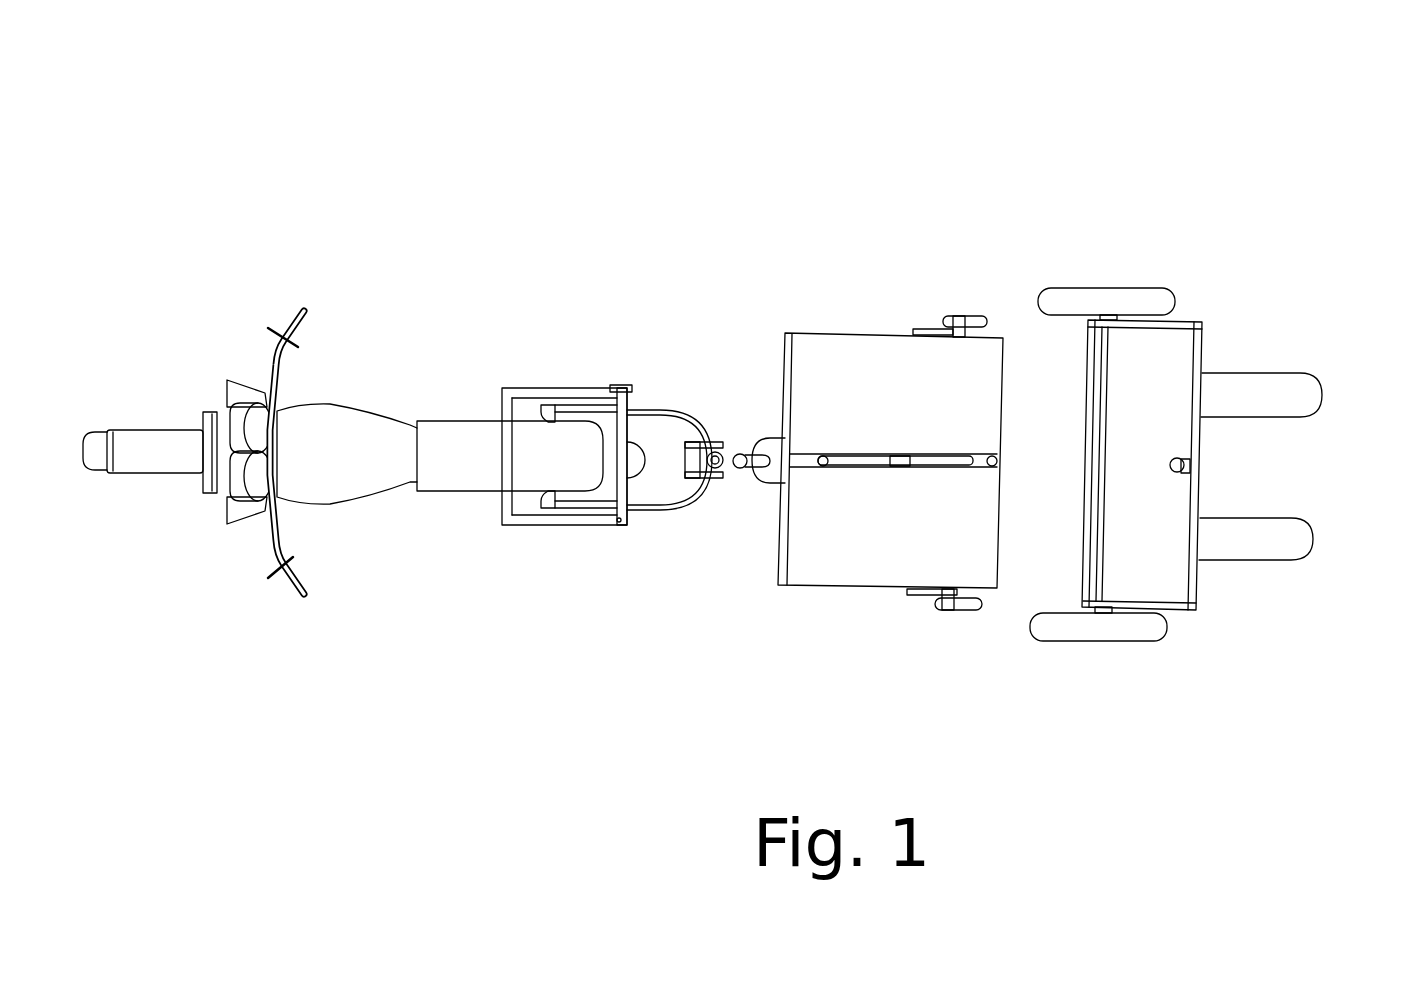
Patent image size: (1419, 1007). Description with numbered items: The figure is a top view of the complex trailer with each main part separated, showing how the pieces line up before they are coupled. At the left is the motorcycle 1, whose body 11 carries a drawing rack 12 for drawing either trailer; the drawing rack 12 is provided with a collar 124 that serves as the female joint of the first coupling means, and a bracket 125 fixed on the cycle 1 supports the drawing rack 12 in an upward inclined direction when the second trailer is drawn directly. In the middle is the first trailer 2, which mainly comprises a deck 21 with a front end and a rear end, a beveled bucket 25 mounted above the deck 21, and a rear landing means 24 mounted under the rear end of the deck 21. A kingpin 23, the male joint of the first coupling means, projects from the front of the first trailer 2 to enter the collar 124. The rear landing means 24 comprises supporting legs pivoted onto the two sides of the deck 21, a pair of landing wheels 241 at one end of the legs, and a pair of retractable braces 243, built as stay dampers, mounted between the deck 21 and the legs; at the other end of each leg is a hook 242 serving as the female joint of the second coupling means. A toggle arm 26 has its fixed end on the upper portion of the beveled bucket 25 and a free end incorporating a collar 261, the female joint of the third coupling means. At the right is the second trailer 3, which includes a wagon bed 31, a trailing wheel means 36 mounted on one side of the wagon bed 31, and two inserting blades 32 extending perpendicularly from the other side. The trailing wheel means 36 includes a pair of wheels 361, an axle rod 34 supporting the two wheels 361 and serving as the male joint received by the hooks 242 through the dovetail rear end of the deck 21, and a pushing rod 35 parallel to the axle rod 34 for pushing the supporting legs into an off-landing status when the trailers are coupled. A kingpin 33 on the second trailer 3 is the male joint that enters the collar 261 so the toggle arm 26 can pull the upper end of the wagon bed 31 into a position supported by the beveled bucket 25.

The motorcycle 1 is at (460, 362).
The motorcycle body 11 is at (608, 480).
The drawing rack 12 is at (599, 410).
The collar 124 is at (710, 474).
The bracket 125 is at (620, 387).
The first trailer 2 is at (923, 197).
The deck 21 is at (812, 318).
The kingpin 23 is at (742, 450).
The rear landing means 24 is at (967, 297).
The landing wheels 241 is at (973, 610).
The hook 242 is at (965, 322).
The retractable braces 243 is at (922, 330).
The beveled bucket 25 is at (868, 573).
The toggle arm 26 is at (840, 467).
The collar 261 is at (988, 448).
The second trailer 3 is at (1110, 220).
The wagon bed 31 is at (1203, 357).
The inserting blades 32 is at (1280, 392).
The kingpin 33 is at (1192, 465).
The axle rod 34 is at (1105, 560).
The pushing rod 35 is at (1083, 567).
The trailing wheel means 36 is at (1108, 653).
The wheels 361 is at (1145, 298).